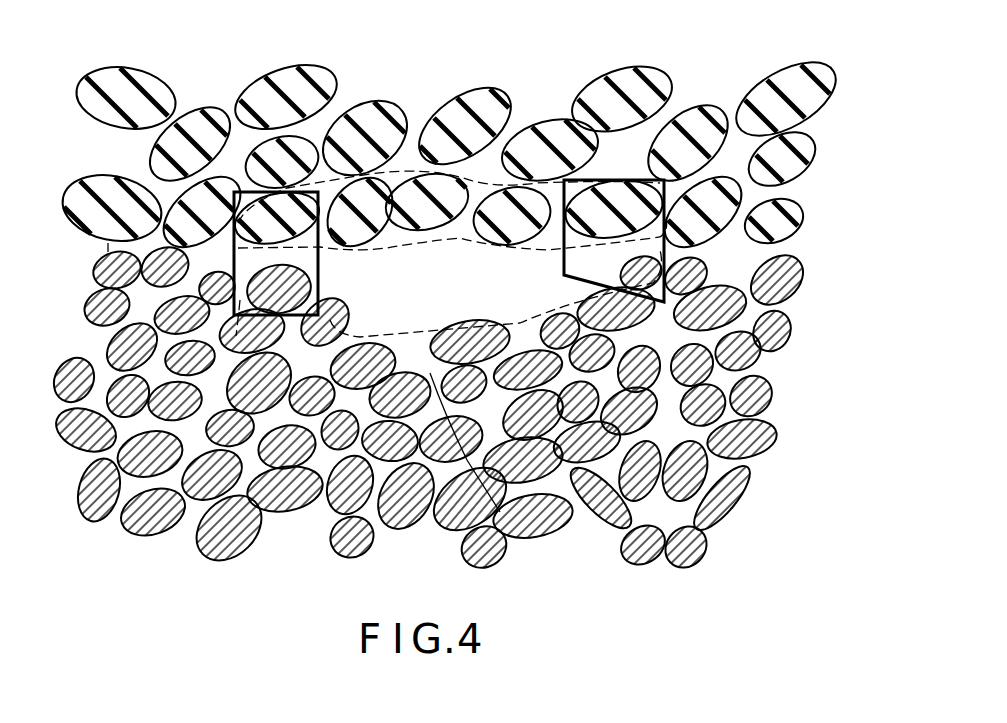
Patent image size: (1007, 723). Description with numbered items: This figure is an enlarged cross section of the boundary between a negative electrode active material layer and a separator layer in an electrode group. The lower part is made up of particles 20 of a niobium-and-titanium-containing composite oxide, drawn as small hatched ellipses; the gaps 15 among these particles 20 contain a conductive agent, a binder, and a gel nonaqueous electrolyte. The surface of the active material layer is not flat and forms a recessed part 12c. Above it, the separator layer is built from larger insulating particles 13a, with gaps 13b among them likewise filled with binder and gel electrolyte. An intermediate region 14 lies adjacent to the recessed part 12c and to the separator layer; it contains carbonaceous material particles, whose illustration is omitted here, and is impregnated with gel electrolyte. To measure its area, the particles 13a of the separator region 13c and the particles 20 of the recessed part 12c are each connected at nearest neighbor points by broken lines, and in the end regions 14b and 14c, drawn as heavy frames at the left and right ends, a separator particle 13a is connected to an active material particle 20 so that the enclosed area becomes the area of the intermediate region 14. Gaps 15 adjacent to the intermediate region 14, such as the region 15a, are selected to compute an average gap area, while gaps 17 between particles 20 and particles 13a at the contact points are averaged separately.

The recessed part 12c is at (403, 440).
The particle 13a is at (813, 75).
The gap 13b is at (413, 115).
The region 13c is at (473, 187).
The intermediate region 14 is at (464, 296).
The region 14b is at (238, 196).
The region 14c is at (663, 207).
The gap 15 is at (215, 387).
The region 15a is at (297, 433).
The gap 17 is at (190, 264).
The particle 20 is at (762, 400).